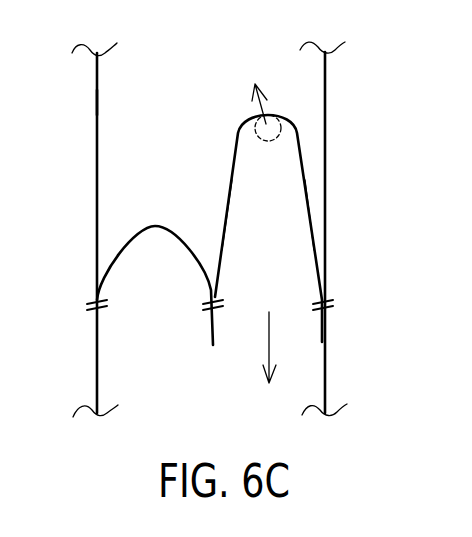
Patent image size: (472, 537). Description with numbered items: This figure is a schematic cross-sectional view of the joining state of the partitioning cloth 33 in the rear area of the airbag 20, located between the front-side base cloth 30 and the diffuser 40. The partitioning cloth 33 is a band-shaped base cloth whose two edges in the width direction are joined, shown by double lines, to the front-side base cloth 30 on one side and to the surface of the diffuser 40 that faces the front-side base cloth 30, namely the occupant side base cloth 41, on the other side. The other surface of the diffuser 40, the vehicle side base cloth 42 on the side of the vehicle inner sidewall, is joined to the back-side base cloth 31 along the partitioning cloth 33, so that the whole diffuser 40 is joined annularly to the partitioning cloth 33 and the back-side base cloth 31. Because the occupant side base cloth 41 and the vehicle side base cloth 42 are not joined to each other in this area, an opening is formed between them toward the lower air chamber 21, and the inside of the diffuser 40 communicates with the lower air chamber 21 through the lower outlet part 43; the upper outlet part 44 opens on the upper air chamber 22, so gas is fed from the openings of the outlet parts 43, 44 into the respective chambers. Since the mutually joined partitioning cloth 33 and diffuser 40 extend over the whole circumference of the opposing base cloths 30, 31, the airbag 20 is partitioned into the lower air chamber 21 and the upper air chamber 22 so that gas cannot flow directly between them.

The airbag 20 is at (79, 107).
The lower air chamber 21 is at (165, 355).
The upper air chamber 22 is at (170, 88).
The front-side base cloth 30 is at (95, 145).
The back-side base cloth 31 is at (325, 99).
The partitioning cloth 33 is at (134, 232).
The diffuser 40 is at (297, 162).
The occupant side base cloth 41 is at (231, 187).
The vehicle side base cloth 42 is at (307, 187).
The lower outlet part 43 is at (245, 325).
The upper outlet part 44 is at (273, 115).